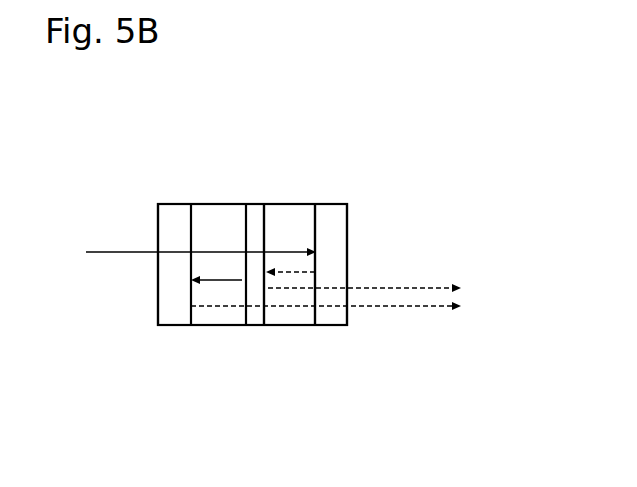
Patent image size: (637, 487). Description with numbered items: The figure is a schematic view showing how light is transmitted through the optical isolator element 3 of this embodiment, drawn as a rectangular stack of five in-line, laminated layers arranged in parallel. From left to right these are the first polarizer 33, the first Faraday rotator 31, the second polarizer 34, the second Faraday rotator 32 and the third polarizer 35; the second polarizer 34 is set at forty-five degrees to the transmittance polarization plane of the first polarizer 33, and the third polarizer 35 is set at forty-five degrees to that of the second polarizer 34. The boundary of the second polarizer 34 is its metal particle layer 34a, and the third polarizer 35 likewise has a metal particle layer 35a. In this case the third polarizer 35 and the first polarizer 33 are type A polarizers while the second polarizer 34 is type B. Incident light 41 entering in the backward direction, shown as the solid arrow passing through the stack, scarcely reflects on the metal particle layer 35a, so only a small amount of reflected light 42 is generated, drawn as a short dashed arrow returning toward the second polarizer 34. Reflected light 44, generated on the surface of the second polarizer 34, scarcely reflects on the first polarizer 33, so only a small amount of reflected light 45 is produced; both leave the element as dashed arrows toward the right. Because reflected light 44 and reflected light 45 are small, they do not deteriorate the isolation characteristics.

The optical isolator element 3 is at (402, 55).
The first Faraday rotator 31 is at (200, 205).
The second Faraday rotator 32 is at (305, 207).
The first polarizer 33 is at (168, 210).
The second polarizer 34 is at (250, 205).
The metal particle layer 34a is at (265, 205).
The third polarizer 35 is at (335, 233).
The metal particle layer 35a is at (320, 216).
The incident light 41 is at (135, 253).
The reflected light 42 is at (303, 274).
The reflected light 44 is at (212, 283).
The reflected light 45 is at (420, 308).